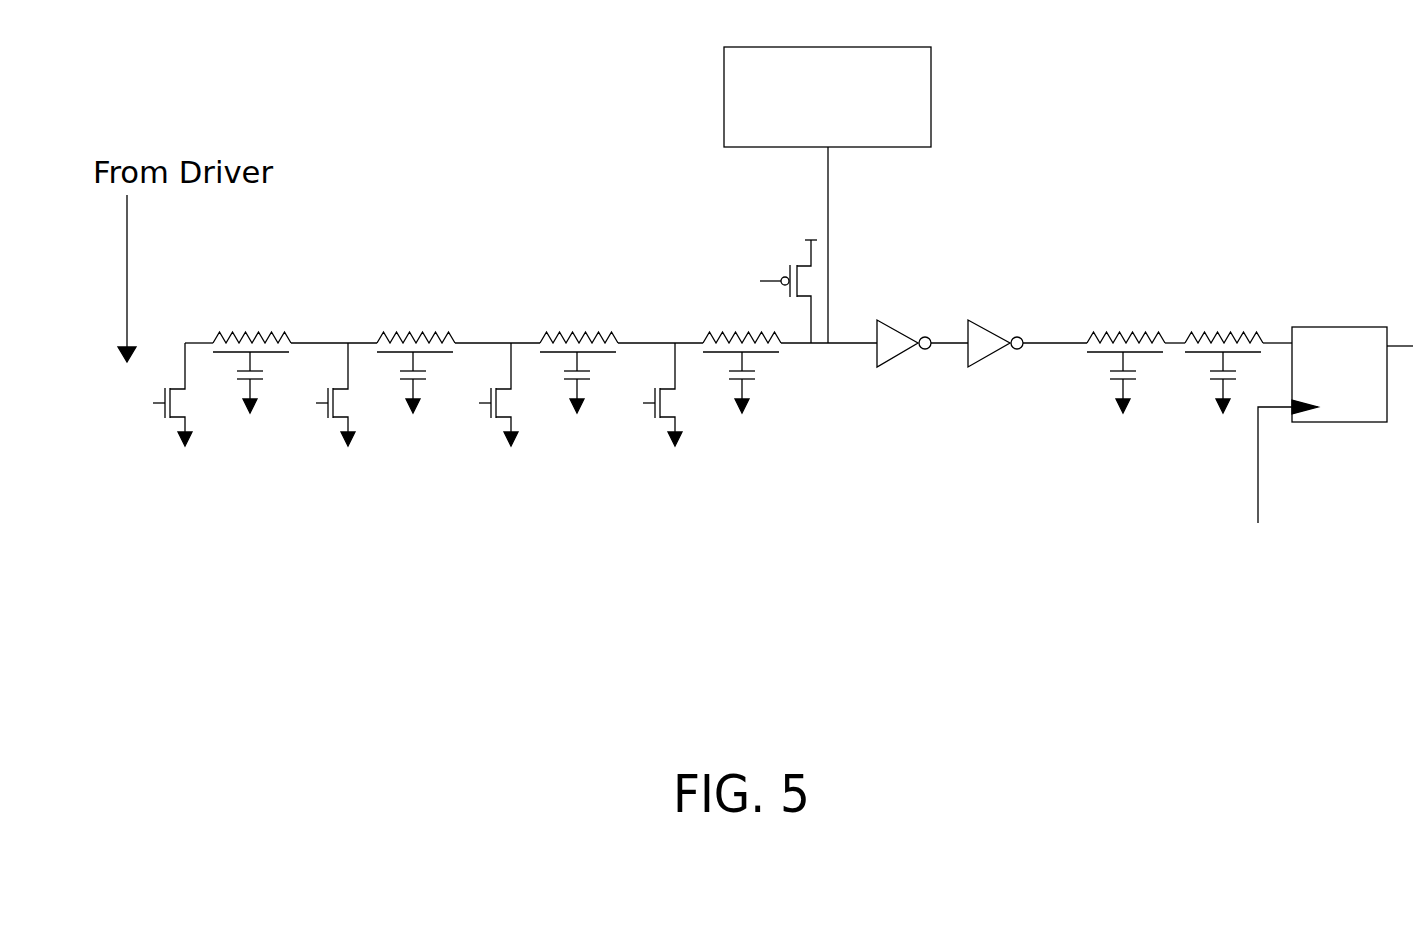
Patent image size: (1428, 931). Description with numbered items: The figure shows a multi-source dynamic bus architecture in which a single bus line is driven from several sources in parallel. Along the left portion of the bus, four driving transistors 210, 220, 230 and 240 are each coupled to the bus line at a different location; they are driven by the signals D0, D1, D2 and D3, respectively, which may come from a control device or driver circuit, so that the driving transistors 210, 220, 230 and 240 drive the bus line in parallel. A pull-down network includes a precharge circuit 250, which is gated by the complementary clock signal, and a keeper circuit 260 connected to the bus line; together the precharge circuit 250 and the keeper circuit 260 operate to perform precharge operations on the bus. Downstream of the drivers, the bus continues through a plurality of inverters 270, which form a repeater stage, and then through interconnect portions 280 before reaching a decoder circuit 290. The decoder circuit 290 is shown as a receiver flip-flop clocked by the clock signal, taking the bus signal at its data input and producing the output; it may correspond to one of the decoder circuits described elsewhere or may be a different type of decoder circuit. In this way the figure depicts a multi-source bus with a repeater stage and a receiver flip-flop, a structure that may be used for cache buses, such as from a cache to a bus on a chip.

The driving transistor 210 is at (195, 422).
The driving transistor 220 is at (358, 422).
The driving transistor 230 is at (523, 422).
The driving transistor 240 is at (687, 422).
The precharge circuit 250 is at (793, 238).
The keeper circuit 260 is at (931, 98).
The inverters 270 is at (1045, 322).
The interconnect portions 280 is at (1268, 322).
The decoder circuit 290 is at (1343, 325).